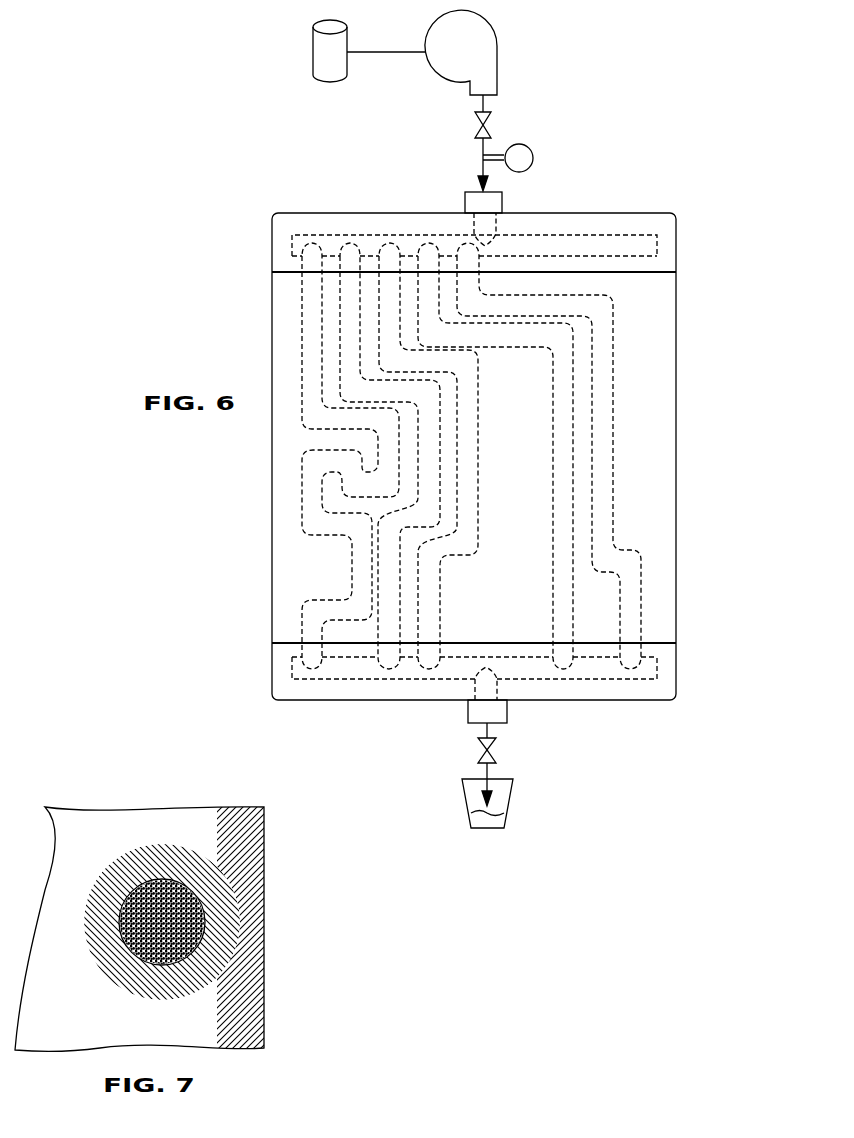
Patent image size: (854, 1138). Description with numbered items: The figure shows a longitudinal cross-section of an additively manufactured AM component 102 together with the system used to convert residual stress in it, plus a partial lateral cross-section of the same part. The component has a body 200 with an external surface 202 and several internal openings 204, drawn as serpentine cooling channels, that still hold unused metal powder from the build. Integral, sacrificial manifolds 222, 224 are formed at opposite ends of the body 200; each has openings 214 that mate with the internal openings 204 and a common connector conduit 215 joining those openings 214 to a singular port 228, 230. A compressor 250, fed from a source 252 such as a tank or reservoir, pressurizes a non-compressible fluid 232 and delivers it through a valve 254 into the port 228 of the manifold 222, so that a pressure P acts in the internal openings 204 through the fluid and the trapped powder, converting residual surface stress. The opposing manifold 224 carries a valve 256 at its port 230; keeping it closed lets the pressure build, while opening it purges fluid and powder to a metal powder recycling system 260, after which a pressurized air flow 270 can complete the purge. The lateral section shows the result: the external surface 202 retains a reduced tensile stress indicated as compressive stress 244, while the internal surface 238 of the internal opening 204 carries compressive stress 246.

In FIG. 6, the AM component 102 is at (600, 206).
In FIG. 7, the AM component 102 is at (189, 916).
In FIG. 6, the body 200 is at (475, 424).
In FIG. 7, the body 200 is at (280, 822).
In FIG. 7, the external surface 202 is at (266, 928).
In FIG. 6, the internal opening 204 is at (573, 400).
In FIG. 7, the internal opening 204 is at (207, 928).
In FIG. 6, the opening 214 is at (310, 267).
In FIG. 6, the common connector conduit 215 is at (332, 243).
In FIG. 6, the manifold 222 is at (678, 245).
In FIG. 6, the manifold 224 is at (677, 656).
In FIG. 6, the port 228 is at (473, 202).
In FIG. 6, the port 230 is at (470, 713).
In FIG. 6, the non-compressible fluid 232 is at (480, 150).
In FIG. 7, the internal surface 238 is at (180, 960).
In FIG. 7, the compressive stress 244 is at (237, 815).
In FIG. 7, the compressive stress 246 is at (205, 963).
In FIG. 6, the compressor 250 is at (493, 67).
In FIG. 6, the source 252 is at (325, 58).
In FIG. 6, the valve 254 is at (493, 123).
In FIG. 6, the valve 256 is at (477, 752).
In FIG. 6, the metal powder recycling system 260 is at (465, 797).
In FIG. 6, the pressurized air flow 270 is at (472, 155).